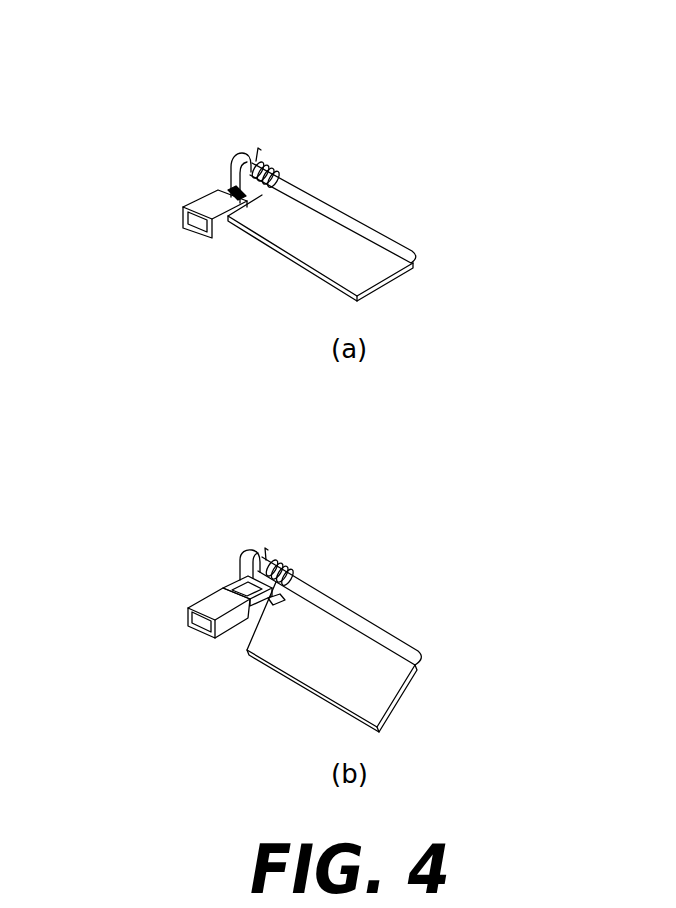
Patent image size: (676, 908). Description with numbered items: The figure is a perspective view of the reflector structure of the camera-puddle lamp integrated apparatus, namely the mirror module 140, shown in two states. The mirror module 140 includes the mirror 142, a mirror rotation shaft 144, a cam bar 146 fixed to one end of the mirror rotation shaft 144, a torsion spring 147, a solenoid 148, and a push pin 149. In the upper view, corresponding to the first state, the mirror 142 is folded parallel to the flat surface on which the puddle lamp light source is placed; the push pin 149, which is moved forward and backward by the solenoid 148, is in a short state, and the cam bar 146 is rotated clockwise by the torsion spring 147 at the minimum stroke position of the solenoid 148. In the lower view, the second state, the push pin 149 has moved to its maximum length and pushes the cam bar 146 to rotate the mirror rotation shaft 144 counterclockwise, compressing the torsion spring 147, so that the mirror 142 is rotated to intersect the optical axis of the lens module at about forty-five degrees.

The mirror module 140 is at (190, 51).
The mirror 142 is at (291, 247).
The mirror rotation shaft 144 is at (368, 233).
The cam bar 146 is at (241, 153).
The torsion spring 147 is at (283, 168).
The solenoid 148 is at (200, 206).
The push pin 149 is at (225, 190).